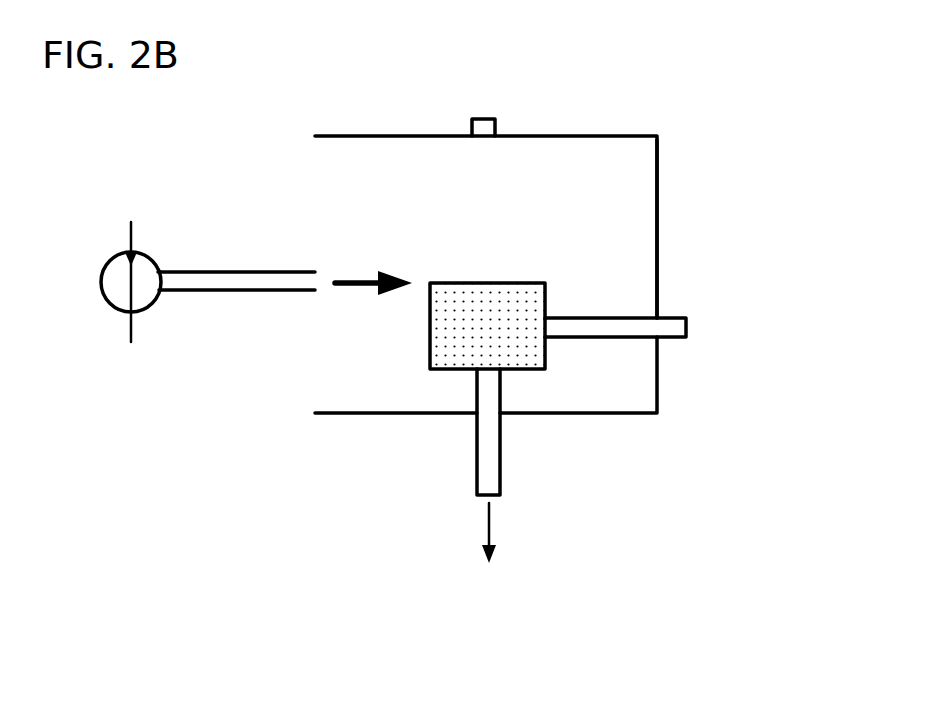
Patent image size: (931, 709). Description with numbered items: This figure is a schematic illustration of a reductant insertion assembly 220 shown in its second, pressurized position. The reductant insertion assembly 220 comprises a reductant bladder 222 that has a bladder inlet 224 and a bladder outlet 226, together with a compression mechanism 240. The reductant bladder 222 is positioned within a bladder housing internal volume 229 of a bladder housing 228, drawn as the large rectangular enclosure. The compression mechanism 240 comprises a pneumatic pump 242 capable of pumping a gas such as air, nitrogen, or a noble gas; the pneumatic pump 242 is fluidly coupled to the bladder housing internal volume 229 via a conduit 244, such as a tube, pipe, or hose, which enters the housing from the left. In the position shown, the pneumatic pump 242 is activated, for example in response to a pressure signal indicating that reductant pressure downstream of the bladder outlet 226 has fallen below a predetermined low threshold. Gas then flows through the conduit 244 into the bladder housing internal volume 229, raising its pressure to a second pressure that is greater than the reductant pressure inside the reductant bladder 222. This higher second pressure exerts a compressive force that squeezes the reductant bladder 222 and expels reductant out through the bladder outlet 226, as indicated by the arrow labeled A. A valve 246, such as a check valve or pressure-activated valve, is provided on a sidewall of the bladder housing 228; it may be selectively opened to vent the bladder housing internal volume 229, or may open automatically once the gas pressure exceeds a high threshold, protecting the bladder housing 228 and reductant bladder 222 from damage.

The reductant insertion assembly 220 is at (652, 115).
The reductant bladder 222 is at (590, 348).
The bladder inlet 224 is at (670, 327).
The bladder outlet 226 is at (487, 453).
The bladder housing 228 is at (658, 195).
The bladder housing internal volume 229 is at (642, 240).
The compression mechanism 240 is at (156, 165).
The pneumatic pump 242 is at (150, 272).
The conduit 244 is at (233, 277).
The valve 246 is at (493, 122).